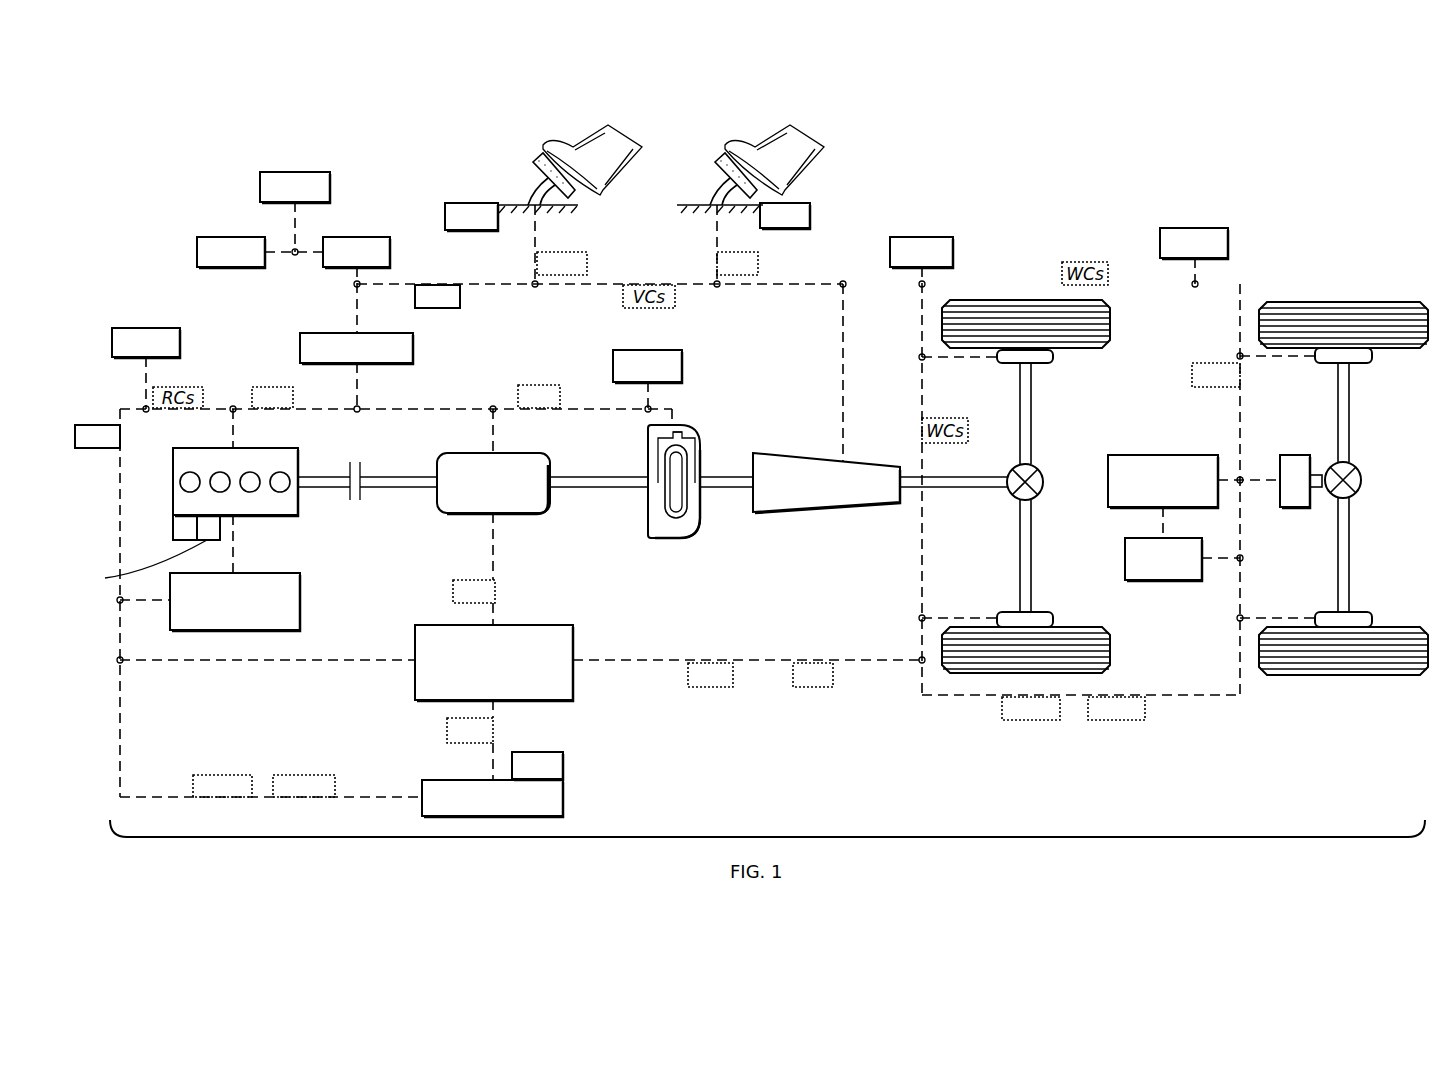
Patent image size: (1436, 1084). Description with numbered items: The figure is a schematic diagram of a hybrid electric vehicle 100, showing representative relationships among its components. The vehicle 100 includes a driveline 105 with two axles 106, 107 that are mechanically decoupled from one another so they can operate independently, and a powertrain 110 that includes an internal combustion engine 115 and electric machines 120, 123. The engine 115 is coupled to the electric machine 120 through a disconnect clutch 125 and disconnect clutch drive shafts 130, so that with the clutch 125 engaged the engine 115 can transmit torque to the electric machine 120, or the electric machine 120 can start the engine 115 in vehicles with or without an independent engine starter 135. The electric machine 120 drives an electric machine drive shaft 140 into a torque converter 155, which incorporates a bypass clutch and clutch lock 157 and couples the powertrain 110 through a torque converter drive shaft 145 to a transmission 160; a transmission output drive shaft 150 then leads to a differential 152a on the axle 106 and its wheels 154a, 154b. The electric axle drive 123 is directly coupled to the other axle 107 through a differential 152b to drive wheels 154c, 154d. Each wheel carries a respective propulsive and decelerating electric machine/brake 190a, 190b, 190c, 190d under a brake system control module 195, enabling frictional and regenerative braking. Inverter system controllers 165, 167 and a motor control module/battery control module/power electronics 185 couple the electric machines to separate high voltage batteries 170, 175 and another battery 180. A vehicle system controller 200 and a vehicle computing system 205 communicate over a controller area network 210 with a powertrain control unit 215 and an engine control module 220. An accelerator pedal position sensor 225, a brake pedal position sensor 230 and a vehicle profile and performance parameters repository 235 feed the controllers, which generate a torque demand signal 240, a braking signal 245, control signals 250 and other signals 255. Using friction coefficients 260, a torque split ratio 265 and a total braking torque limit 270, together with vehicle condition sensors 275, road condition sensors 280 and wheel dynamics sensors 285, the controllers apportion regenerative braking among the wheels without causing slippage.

The hybrid electric vehicle 100 is at (1035, 225).
The driveline 105 is at (1060, 838).
The axle 106 is at (1032, 548).
The axle 107 is at (1352, 548).
The powertrain 110 is at (600, 565).
The internal combustion engine 115 is at (298, 515).
The electric machine 120 is at (510, 513).
The electric axle drive electric machine 123 is at (1295, 455).
The disconnect clutch 125 is at (362, 500).
The disconnect clutch drive shafts 130 is at (330, 477).
The independent engine starter 135 is at (173, 535).
The electric machine drive shaft 140 is at (625, 477).
The torque converter drive shaft 145 is at (730, 477).
The transmission output drive shaft 150 is at (980, 487).
The differential 152a is at (1043, 473).
The differential 152b is at (1360, 470).
The wheel 154a is at (1070, 348).
The wheel 154b is at (1082, 627).
The wheel 154c is at (1388, 348).
The wheel 154d is at (1400, 627).
The torque converter 155 is at (698, 523).
The bypass clutch and clutch lock 157 is at (690, 462).
The transmission 160 is at (800, 510).
The inverter system controller 165 is at (563, 760).
The inverter system controller 167 is at (1180, 580).
The high voltage battery 170 is at (563, 797).
The high voltage battery 175 is at (1185, 455).
The battery 180 is at (141, 572).
The motor control module / battery electrical control module / power electronics 185 is at (573, 640).
The electric machine/brake 190a is at (1005, 362).
The electric machine/brake 190b is at (1005, 612).
The electric machine/brake 190c is at (1322, 366).
The electric machine/brake 190d is at (1322, 612).
The brake system control module 195 is at (922, 237).
The vehicle system controller 200 is at (328, 267).
The vehicle computing system 205 is at (228, 267).
The controller area network 210 is at (460, 300).
The powertrain control unit/module 215 is at (413, 350).
The engine control module 220 is at (300, 625).
The accelerator pedal position and motion sensor 225 is at (540, 190).
The brake pedal position and motion sensor 230 is at (722, 190).
The vehicle profile and performance parameters repository 235 is at (308, 172).
The torque demand signal 240 is at (587, 264).
The braking signal 245 is at (758, 266).
The control signals 250 is at (262, 387).
The other signals 255 is at (560, 390).
The friction coefficients 260 is at (1045, 720).
The torque split ratio 265 is at (1135, 720).
The total braking torque limit 270 is at (1192, 373).
The vehicle condition sensors 275 is at (680, 350).
The road condition sensors 280 is at (140, 328).
The wheel dynamics sensors 285 is at (1215, 228).